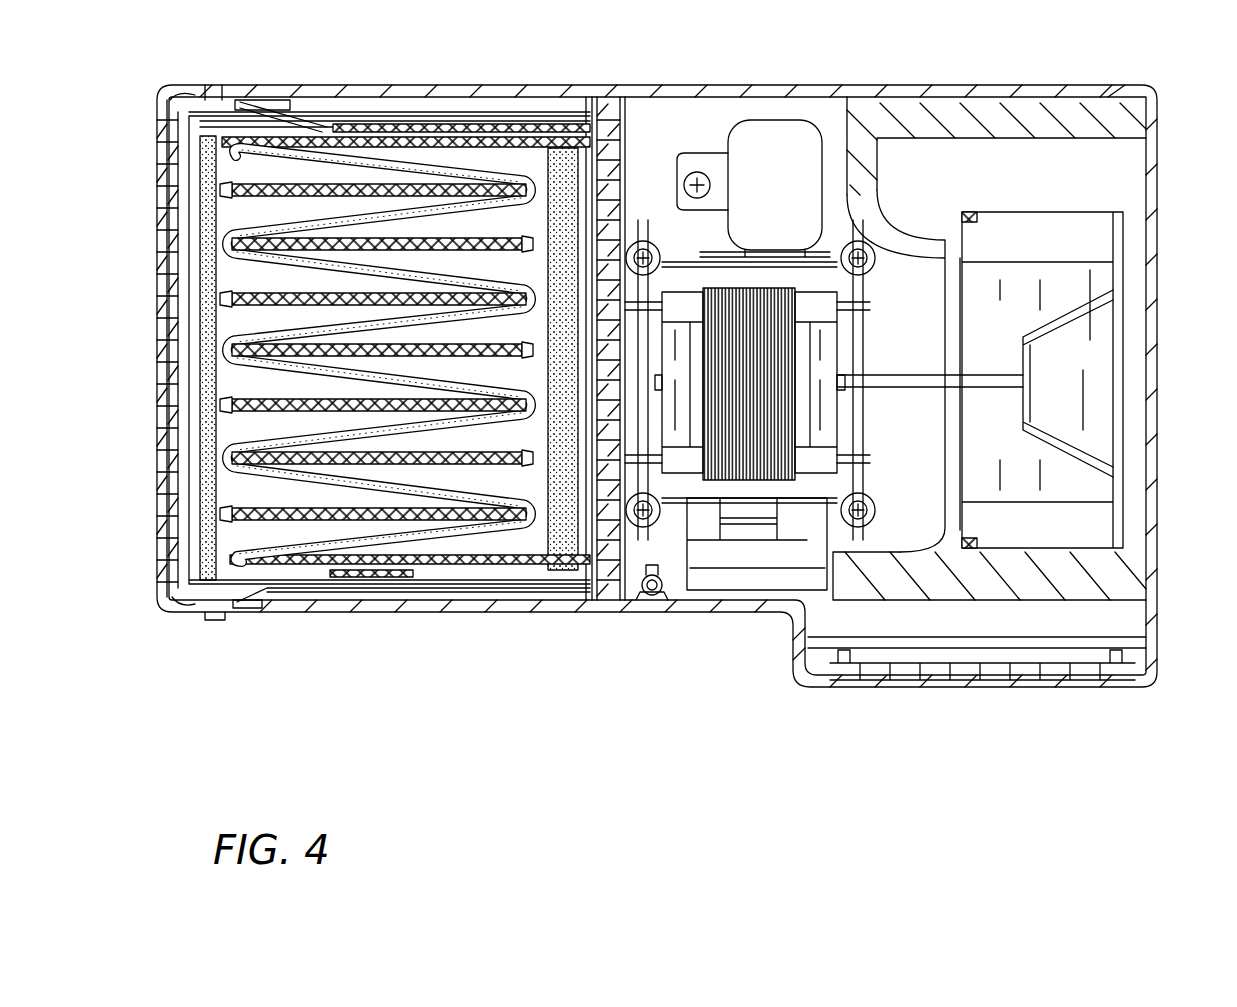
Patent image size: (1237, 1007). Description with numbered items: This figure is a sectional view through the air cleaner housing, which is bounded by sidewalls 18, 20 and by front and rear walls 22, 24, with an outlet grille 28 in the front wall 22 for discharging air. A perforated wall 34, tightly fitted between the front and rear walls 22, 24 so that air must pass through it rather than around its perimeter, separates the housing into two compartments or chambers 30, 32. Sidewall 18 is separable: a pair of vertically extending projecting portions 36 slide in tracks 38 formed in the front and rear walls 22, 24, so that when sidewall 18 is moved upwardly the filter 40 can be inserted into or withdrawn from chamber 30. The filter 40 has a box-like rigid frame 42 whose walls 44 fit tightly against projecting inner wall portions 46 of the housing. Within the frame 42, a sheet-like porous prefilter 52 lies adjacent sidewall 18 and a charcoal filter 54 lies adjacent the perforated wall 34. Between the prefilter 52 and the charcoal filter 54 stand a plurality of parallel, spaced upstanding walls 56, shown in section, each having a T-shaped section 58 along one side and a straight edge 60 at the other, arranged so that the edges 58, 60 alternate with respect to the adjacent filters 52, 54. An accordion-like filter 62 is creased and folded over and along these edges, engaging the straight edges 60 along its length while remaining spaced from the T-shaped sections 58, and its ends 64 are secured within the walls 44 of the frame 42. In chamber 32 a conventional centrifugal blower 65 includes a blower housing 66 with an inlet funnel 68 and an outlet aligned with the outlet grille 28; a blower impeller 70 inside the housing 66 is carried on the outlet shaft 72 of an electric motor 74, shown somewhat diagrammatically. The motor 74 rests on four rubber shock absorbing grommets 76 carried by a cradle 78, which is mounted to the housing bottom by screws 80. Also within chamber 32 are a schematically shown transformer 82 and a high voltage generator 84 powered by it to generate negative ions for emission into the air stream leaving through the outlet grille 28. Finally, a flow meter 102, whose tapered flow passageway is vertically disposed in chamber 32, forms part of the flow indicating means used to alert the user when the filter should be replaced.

The sidewall 18 is at (160, 270).
The sidewall 20 is at (1158, 240).
The front wall 22 is at (492, 614).
The rear wall 24 is at (872, 90).
The outlet grille 28 is at (940, 684).
The compartment or chamber 30 is at (378, 352).
The compartment or chamber 32 is at (695, 128).
The perforated wall 34 is at (622, 138).
The projecting portions 36 is at (240, 98).
The tracks 38 is at (196, 94).
The filter 40 is at (589, 122).
The rigid frame 42 is at (180, 226).
The walls 44 is at (427, 128).
The projecting inner wall portions 46 is at (262, 101).
The prefilter 52 is at (203, 386).
The charcoal filter 54 is at (562, 565).
The upstanding walls 56 is at (514, 343).
The T-shaped section 58 is at (508, 467).
The straight edge 60 is at (513, 178).
The accordion-like filter 62 is at (440, 272).
The ends 64 is at (530, 292).
The centrifugal blower 65 is at (1068, 96).
The blower housing 66 is at (1042, 125).
The inlet funnel 68 is at (892, 210).
The blower impeller 70 is at (1086, 235).
The outlet shaft 72 is at (976, 366).
The electric motor 74 is at (712, 292).
The rubber shock absorbing grommets 76 is at (866, 298).
The cradle 78 is at (868, 340).
The screws 80 is at (660, 250).
The transformer 82 is at (790, 190).
The high voltage generator 84 is at (746, 578).
The flow meter 102 is at (652, 598).